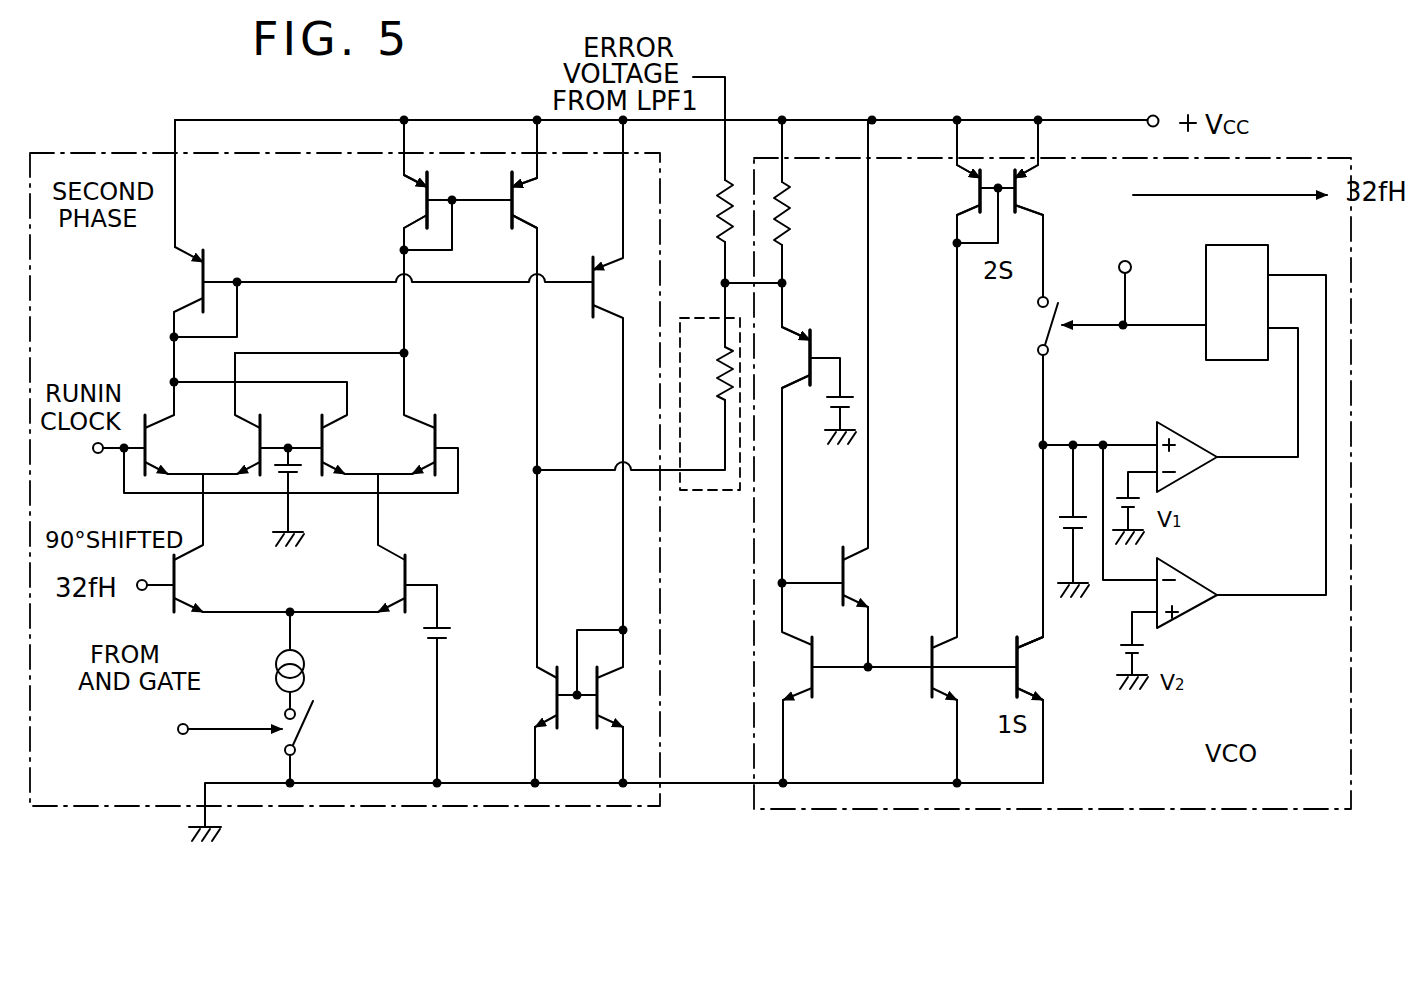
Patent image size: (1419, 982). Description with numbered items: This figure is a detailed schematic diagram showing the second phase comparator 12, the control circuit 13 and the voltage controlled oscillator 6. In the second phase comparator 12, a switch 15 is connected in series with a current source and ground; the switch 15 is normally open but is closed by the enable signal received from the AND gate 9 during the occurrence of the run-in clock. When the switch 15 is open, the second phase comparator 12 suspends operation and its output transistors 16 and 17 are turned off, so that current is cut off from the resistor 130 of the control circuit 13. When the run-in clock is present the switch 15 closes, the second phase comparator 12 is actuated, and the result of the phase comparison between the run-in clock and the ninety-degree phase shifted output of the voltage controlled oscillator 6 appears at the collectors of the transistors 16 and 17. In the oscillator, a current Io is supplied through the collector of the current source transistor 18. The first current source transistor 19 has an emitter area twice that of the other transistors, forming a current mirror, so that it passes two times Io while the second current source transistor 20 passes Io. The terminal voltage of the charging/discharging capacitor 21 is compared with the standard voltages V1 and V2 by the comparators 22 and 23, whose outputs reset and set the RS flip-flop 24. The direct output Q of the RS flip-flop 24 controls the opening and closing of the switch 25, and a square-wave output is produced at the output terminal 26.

The voltage controlled oscillator 6 is at (925, 809).
The AND gate 9 is at (165, 725).
The second phase comparator 12 is at (371, 808).
The control circuit 13 is at (690, 495).
The switch 15 is at (314, 732).
The output transistor 16 is at (527, 216).
The output transistor 17 is at (549, 664).
The current source transistor 18 is at (790, 332).
The first current source transistor 19 is at (1026, 198).
The second current source transistor 20 is at (1033, 636).
The charging/discharging capacitor 21 is at (1066, 514).
The comparator 22 is at (1155, 420).
The comparator 23 is at (1190, 615).
The RS flip-flop 24 is at (1240, 245).
The switch 25 is at (1040, 322).
The output terminal 26 is at (1130, 262).
The resistor 130 is at (701, 395).